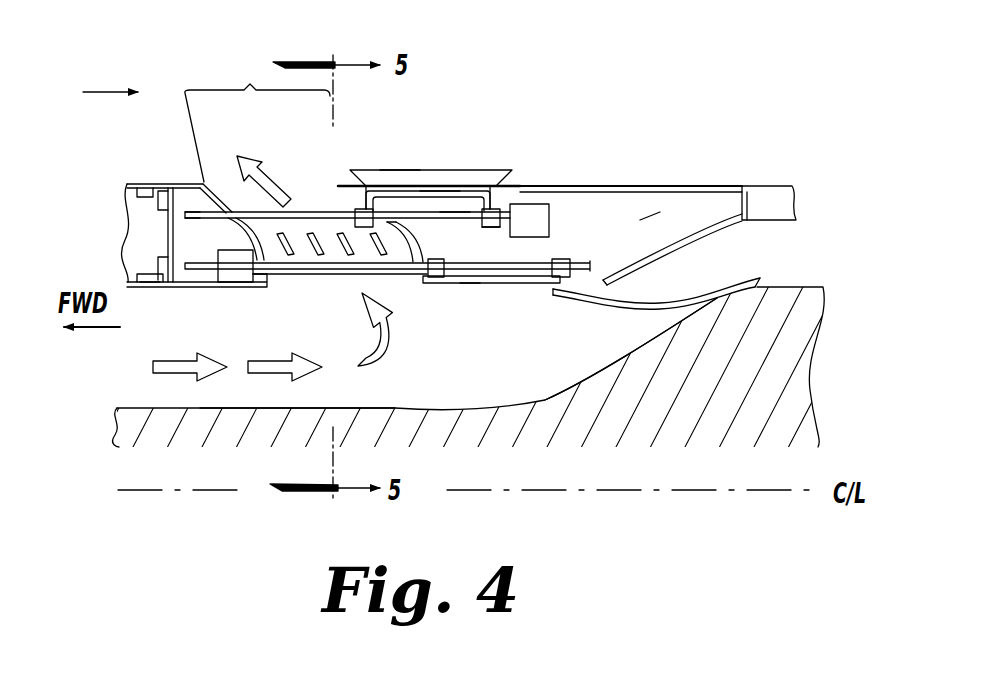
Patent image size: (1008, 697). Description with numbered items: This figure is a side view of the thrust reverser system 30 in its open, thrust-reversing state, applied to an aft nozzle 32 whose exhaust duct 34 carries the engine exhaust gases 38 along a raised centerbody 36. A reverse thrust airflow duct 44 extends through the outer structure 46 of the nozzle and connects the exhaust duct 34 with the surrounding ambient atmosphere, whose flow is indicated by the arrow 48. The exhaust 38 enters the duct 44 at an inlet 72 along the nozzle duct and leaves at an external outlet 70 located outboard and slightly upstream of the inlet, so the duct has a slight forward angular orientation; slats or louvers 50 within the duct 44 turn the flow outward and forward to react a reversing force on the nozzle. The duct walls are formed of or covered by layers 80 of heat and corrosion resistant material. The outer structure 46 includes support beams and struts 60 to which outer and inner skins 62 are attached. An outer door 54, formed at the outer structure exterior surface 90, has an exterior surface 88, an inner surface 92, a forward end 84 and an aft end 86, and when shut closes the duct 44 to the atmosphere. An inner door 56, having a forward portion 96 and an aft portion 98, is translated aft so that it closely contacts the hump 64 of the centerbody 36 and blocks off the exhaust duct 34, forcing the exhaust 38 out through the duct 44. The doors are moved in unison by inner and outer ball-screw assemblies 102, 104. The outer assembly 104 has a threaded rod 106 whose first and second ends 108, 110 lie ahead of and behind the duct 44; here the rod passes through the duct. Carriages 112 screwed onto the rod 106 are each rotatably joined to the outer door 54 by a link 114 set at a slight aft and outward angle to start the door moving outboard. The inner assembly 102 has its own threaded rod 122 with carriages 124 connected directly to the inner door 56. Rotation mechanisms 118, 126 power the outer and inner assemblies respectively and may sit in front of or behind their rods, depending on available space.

The thrust reverser system 30 is at (467, 59).
The aft nozzle 32 is at (714, 184).
The exhaust duct 34 is at (218, 408).
The centerbody 36 is at (410, 406).
The engine exhaust gases 38 is at (275, 369).
The reverse thrust airflow duct 44 is at (227, 185).
The outer structure 46 is at (651, 215).
The ambient airflow 48 is at (113, 90).
The slats or louvers 50 is at (395, 272).
The outer door 54 is at (410, 184).
The inner door 56 is at (494, 291).
The support beams and struts 60 is at (148, 190).
The outer and inner skins 62 is at (146, 287).
The hump 64 is at (642, 347).
The external outlet 70 is at (257, 115).
The inlet 72 is at (363, 329).
The layers of heat and corrosion resistant material 80 is at (187, 211).
The forward end 84 is at (370, 170).
The aft end 86 is at (485, 182).
The exterior surface 88 is at (374, 185).
The outer structure exterior surface 90 is at (653, 166).
The inner surface 92 is at (438, 186).
The forward portion 96 is at (470, 284).
The aft portion 98 is at (660, 297).
The inner ball-screw assembly 102 is at (228, 283).
The outer ball-screw assembly 104 is at (553, 223).
The threaded rod 106 is at (459, 221).
The first end 108 is at (212, 192).
The second end 110 is at (497, 228).
The carriages 112 is at (355, 210).
The link 114 is at (362, 208).
The rotation mechanism 118 is at (549, 210).
The inner assembly threaded rod 122 is at (314, 280).
The inner assembly carriages 124 is at (560, 278).
The rotation mechanism 126 is at (240, 280).